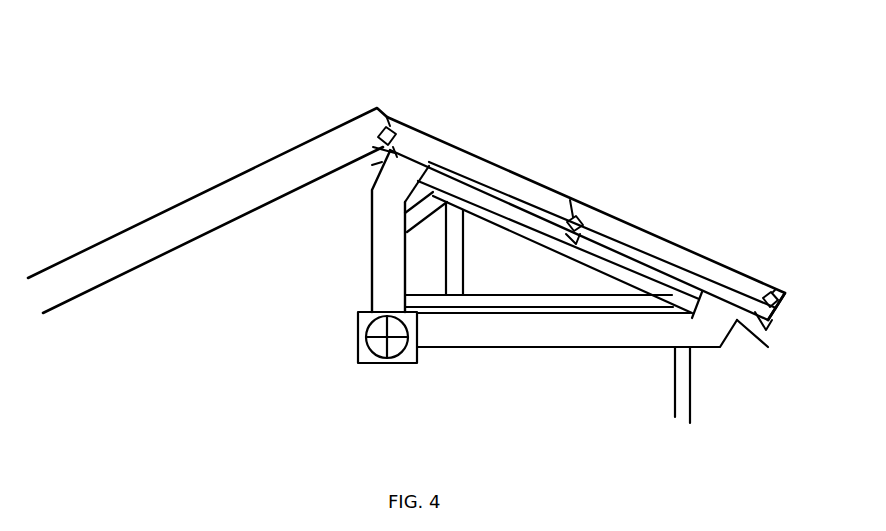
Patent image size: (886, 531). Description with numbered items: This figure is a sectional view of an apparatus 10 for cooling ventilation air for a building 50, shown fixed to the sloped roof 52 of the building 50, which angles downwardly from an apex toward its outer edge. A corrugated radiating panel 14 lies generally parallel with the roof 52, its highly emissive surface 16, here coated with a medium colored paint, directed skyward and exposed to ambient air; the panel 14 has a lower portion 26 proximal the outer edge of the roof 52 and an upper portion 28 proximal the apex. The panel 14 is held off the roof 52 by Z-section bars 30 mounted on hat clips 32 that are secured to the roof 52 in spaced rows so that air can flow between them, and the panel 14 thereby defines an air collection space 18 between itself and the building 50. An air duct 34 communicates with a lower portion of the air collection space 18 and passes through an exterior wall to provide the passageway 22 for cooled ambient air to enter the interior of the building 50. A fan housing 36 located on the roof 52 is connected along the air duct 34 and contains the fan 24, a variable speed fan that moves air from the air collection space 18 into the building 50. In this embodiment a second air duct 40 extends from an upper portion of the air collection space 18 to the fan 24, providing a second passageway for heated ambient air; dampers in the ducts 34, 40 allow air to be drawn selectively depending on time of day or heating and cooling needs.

The apparatus for cooling ventilation air 10 is at (692, 76).
The radiating panel 14 is at (425, 130).
The emissive surface 16 is at (737, 292).
The air collection space 18 is at (510, 193).
The passageway 22 is at (733, 332).
The fan 24 is at (373, 333).
The lower portion 26 is at (756, 287).
The upper portion 28 is at (400, 127).
The Z-section bar 30 is at (578, 208).
The hat clip 32 is at (583, 226).
The air duct 34 is at (693, 335).
The fan housing 36 is at (358, 357).
The second air duct 40 is at (371, 240).
The building 50 is at (682, 415).
The roof 52 is at (530, 227).